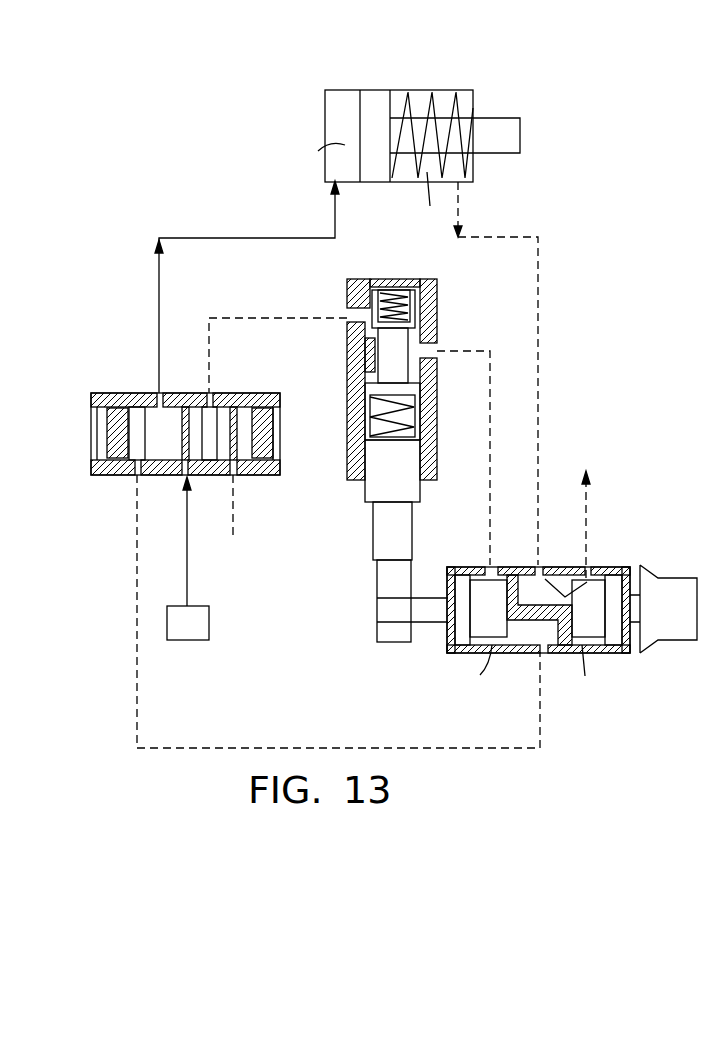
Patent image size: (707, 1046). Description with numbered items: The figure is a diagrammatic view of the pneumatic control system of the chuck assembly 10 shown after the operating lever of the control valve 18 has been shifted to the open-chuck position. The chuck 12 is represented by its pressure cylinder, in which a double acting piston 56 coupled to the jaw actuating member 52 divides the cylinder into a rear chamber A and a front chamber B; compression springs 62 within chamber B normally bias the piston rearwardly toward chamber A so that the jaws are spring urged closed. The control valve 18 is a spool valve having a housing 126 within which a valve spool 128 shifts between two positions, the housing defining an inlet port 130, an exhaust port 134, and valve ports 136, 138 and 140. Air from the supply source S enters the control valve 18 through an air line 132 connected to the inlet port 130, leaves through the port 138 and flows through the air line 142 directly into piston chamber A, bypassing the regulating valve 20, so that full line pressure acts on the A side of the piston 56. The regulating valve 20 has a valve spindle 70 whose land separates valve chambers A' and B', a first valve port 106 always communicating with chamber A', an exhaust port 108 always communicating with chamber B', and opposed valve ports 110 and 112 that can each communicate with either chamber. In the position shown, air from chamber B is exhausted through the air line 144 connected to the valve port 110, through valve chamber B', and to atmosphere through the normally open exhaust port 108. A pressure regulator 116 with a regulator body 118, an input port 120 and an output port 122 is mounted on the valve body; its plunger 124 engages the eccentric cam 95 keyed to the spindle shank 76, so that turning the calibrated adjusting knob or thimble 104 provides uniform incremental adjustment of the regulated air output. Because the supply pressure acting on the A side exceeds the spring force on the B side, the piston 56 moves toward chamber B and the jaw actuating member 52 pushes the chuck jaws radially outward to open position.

The pneumatic chuck assembly 10 is at (243, 127).
The chuck 12 is at (411, 130).
The double acting piston 56 is at (378, 105).
The jaw actuating member 52 is at (488, 145).
The compression springs 62 is at (403, 145).
The air line 142 is at (228, 238).
The air line 144 is at (541, 317).
The pressure regulator 116 is at (393, 405).
The regulator body 118 is at (346, 298).
The input port 120 is at (344, 318).
The output port 122 is at (438, 352).
The valve port 140 is at (207, 385).
The control valve 18 is at (290, 529).
The housing 126 is at (112, 475).
The valve spool 128 is at (107, 450).
The valve port 138 is at (163, 392).
The valve port 136 is at (150, 473).
The exhaust port 134 is at (232, 474).
The inlet port 130 is at (180, 476).
The air line 132 is at (187, 570).
The plunger 124 is at (382, 560).
The eccentric cam 95 is at (390, 642).
The shank 76 is at (432, 612).
The regulating valve 20 is at (512, 573).
The valve spindle 70 is at (594, 650).
The first valve port 106 is at (492, 566).
The valve port 110 is at (539, 566).
The exhaust port 108 is at (576, 566).
The valve port 112 is at (545, 655).
The adjusting knob or thimble 104 is at (678, 640).